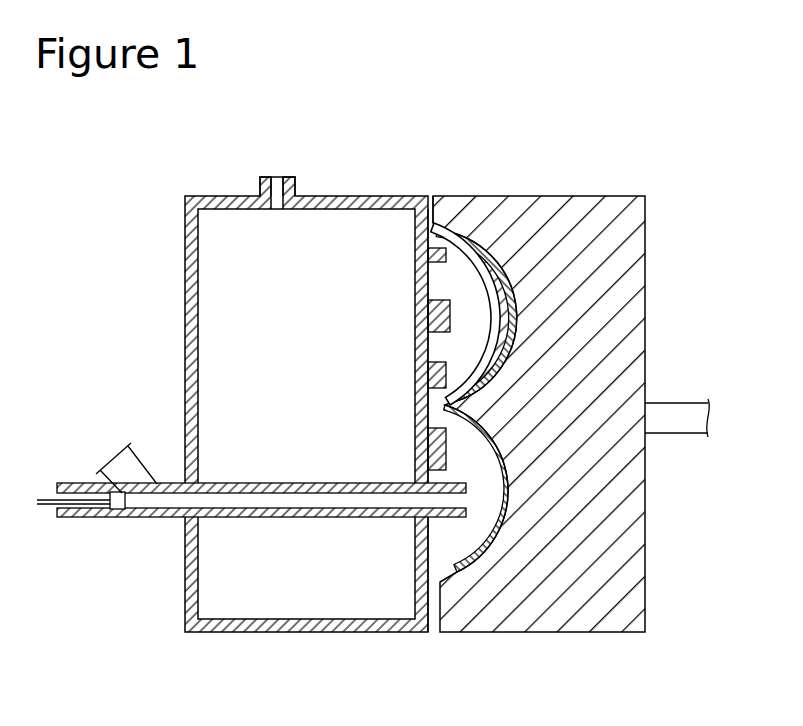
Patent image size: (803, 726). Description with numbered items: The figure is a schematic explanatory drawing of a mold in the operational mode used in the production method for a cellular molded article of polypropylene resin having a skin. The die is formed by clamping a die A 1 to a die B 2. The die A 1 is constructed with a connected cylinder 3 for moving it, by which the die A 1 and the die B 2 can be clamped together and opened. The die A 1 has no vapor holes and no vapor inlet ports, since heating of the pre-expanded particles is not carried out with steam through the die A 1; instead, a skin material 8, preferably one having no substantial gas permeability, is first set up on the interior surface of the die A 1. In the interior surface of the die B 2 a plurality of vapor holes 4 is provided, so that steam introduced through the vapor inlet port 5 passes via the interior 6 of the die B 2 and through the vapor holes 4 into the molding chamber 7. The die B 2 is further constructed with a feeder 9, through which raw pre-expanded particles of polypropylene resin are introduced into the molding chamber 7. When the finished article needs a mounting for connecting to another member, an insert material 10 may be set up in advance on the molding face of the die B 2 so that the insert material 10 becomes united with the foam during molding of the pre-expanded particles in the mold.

The die A 1 is at (637, 249).
The die B 2 is at (325, 198).
The cylinder 3 is at (678, 410).
The vapor holes 4 is at (445, 230).
The vapor inlet port 5 is at (277, 178).
The interior of die B 6 is at (297, 319).
The molding chamber 7 is at (458, 548).
The skin material 8 is at (432, 634).
The feeder 9 is at (133, 518).
The insert material 10 is at (468, 275).